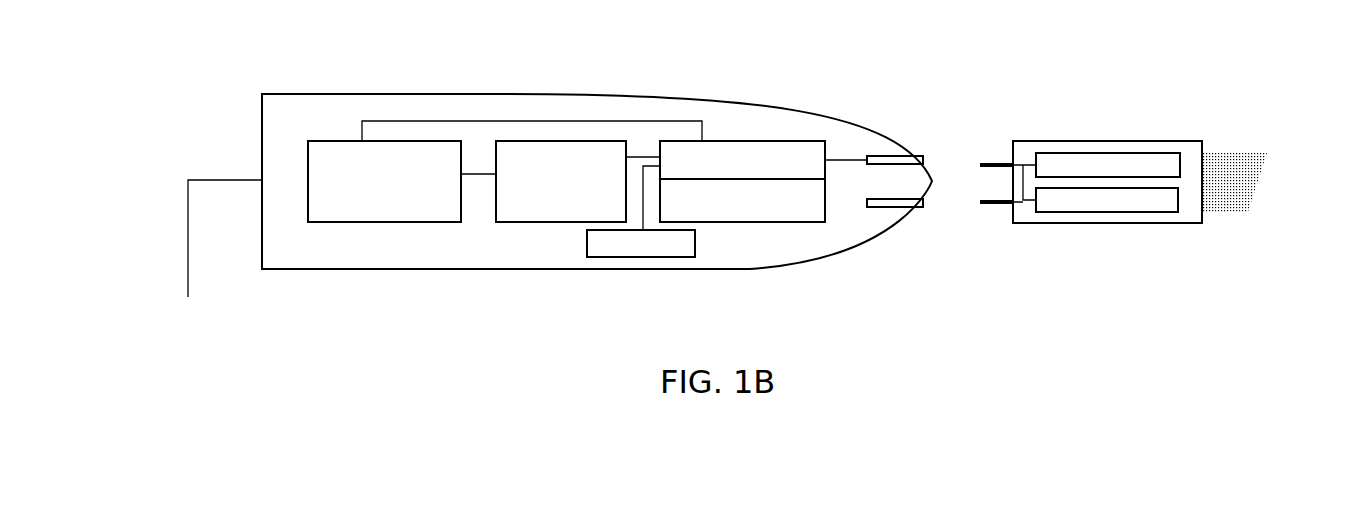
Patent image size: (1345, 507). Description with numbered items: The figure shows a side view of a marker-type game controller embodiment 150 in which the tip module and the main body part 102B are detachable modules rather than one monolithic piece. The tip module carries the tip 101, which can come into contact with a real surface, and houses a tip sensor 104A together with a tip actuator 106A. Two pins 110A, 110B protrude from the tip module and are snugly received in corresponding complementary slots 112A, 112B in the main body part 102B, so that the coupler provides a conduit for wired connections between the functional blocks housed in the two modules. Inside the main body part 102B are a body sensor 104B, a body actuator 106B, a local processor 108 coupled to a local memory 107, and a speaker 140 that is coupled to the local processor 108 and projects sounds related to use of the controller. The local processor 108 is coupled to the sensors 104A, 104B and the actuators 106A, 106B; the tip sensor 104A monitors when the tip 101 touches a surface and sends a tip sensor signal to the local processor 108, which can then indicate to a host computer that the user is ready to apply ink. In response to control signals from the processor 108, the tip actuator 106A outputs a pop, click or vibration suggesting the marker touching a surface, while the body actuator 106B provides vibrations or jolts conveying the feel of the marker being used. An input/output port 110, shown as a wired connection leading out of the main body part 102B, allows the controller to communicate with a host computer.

The tip 101 is at (1242, 175).
The main body part 102B is at (540, 97).
The tip sensor 104A is at (1148, 157).
The body sensor 104B is at (370, 208).
The tip actuator 106A is at (1147, 208).
The body actuator 106B is at (543, 212).
The local memory 107 is at (750, 213).
The local processor 108 is at (715, 141).
The input/output port 110 is at (188, 245).
The pin 110A is at (992, 163).
The pin 110B is at (980, 205).
The slot 112A is at (897, 153).
The slot 112B is at (907, 207).
The speaker 140 is at (645, 257).
The marker-type controller embodiment 150 is at (1087, 47).